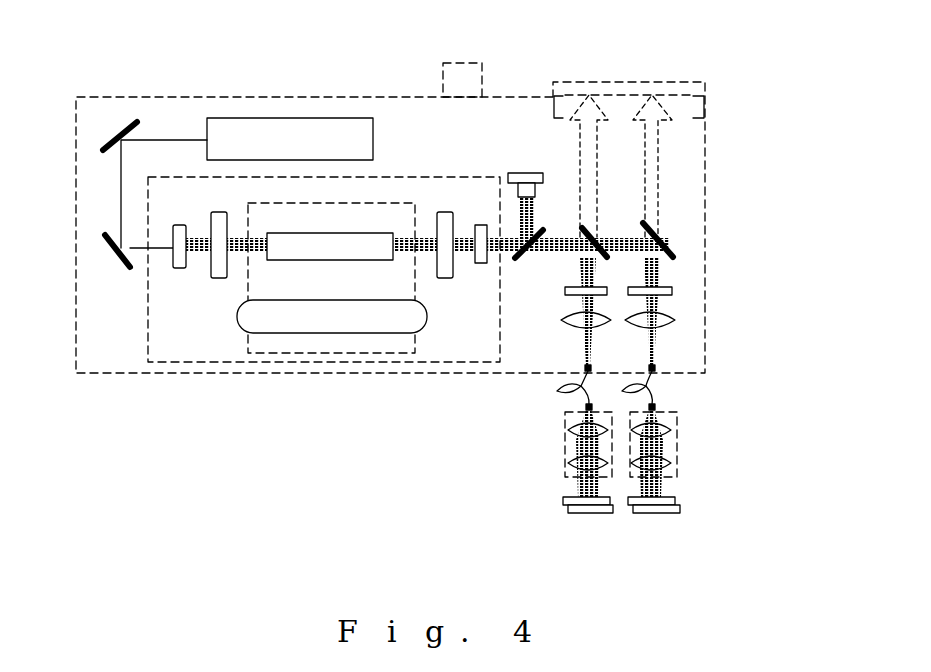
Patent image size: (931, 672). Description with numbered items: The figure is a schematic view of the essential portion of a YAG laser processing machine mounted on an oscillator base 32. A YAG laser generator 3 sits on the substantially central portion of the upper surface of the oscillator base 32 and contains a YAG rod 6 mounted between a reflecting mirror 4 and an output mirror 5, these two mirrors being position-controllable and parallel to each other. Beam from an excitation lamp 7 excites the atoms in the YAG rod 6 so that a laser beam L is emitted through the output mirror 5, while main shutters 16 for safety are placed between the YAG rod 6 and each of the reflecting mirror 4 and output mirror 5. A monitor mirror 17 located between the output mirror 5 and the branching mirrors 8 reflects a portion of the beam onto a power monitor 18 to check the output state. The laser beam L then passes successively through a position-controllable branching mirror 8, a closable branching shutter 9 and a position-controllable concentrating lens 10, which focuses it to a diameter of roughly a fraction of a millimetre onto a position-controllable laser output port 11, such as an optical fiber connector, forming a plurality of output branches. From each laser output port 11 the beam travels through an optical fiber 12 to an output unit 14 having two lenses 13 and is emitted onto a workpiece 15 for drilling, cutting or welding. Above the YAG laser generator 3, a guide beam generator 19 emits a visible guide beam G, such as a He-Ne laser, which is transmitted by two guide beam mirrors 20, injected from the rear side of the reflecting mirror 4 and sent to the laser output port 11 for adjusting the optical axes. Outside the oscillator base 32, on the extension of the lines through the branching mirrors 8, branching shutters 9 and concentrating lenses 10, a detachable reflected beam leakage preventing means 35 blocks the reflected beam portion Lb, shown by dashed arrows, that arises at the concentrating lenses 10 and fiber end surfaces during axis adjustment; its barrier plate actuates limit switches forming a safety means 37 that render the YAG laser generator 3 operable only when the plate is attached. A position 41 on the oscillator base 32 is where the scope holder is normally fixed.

The YAG laser generator 3 is at (197, 365).
The reflecting mirror 4 is at (182, 268).
The output mirror 5 is at (480, 265).
The YAG rod 6 is at (373, 232).
The excitation lamp 7 is at (348, 323).
The branching mirror 8 is at (593, 237).
The branching shutter 9 is at (575, 288).
The concentrating lens 10 is at (572, 323).
The laser output port 11 is at (591, 368).
The optical fiber 12 is at (567, 395).
The lens 13 is at (567, 425).
The output unit 14 is at (563, 458).
The workpiece 15 is at (593, 513).
The main shutter 16 is at (212, 218).
The monitor mirror 17 is at (527, 258).
The power monitor 18 is at (530, 177).
The guide beam generator 19 is at (288, 128).
The guide beam mirror 20 is at (116, 128).
The oscillator base 32 is at (108, 375).
The reflected beam portion leakage preventing means 35 is at (670, 88).
The safety means 37 is at (553, 100).
The position 41 is at (463, 80).
The guide beam G is at (118, 192).
The laser beam L is at (561, 232).
The reflected beam portion Lb is at (598, 156).